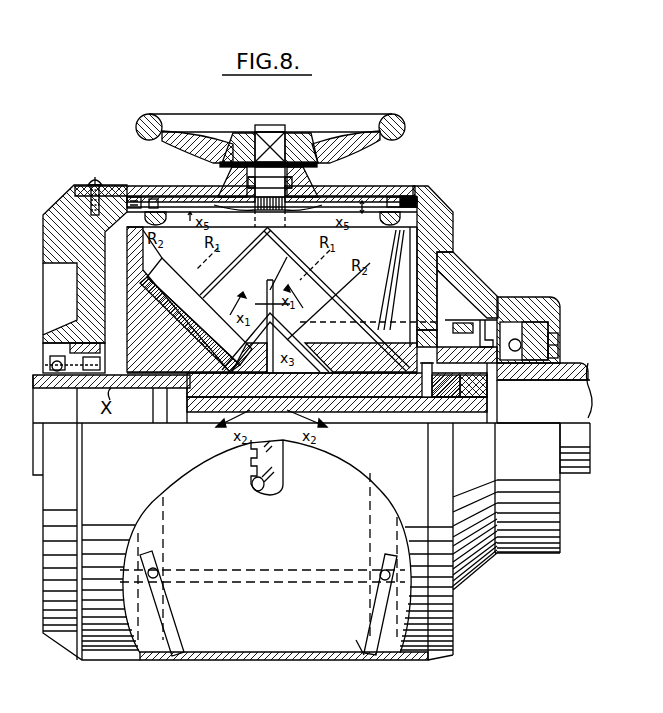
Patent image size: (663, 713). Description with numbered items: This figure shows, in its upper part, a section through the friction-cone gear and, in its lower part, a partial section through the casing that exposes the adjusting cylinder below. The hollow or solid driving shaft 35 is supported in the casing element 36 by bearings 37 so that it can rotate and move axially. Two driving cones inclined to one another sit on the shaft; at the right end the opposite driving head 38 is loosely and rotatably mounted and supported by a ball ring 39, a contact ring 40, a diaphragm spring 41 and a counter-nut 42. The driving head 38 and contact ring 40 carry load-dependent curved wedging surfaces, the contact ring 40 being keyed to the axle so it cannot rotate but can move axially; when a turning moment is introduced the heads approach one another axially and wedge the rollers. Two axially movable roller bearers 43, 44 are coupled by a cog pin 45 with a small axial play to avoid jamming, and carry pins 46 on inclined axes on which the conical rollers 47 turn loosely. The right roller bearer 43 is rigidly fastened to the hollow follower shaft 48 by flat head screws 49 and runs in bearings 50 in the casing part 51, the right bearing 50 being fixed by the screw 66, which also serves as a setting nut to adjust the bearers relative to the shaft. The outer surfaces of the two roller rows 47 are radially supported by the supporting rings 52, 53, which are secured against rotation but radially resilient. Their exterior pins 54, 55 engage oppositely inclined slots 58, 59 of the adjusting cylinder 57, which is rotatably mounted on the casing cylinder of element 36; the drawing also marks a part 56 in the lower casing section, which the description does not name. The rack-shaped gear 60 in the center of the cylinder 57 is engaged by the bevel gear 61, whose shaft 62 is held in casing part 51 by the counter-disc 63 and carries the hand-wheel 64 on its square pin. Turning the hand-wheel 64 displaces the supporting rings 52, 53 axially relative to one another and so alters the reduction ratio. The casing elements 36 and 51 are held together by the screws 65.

The driving shaft 35 is at (40, 382).
The casing element 36 is at (50, 212).
The bearings 37 is at (43, 350).
The driving head 38 is at (360, 412).
The ball ring 39 is at (400, 412).
The contact ring 40 is at (428, 412).
The diaphragm spring 41 is at (448, 412).
The counter-nut 42 is at (470, 412).
The roller bearer 43 is at (472, 293).
The roller bearer 44 is at (182, 412).
The cog pin 45 is at (302, 345).
The pins 46 is at (162, 280).
The conical rollers 47 is at (140, 300).
The follower shaft 48 is at (565, 368).
The flat head screws 49 is at (465, 322).
The bearings 50 is at (548, 294).
The casing part 51 is at (440, 216).
The supporting ring 52 is at (166, 231).
The supporting ring 53 is at (388, 227).
The exterior pin 54 is at (146, 195).
The exterior pin 55 is at (407, 195).
The plate 56 is at (326, 200).
The adjusting cylinder 57 is at (373, 189).
The inclined slot 58 is at (178, 658).
The inclined slot 59 is at (354, 653).
The rack gear 60 is at (262, 496).
The bevel gear 61 is at (220, 197).
The shaft 62 is at (302, 140).
The counter-disc 63 is at (216, 162).
The hand-wheel 64 is at (406, 129).
The screws 65 is at (95, 182).
The screw 66 is at (558, 341).